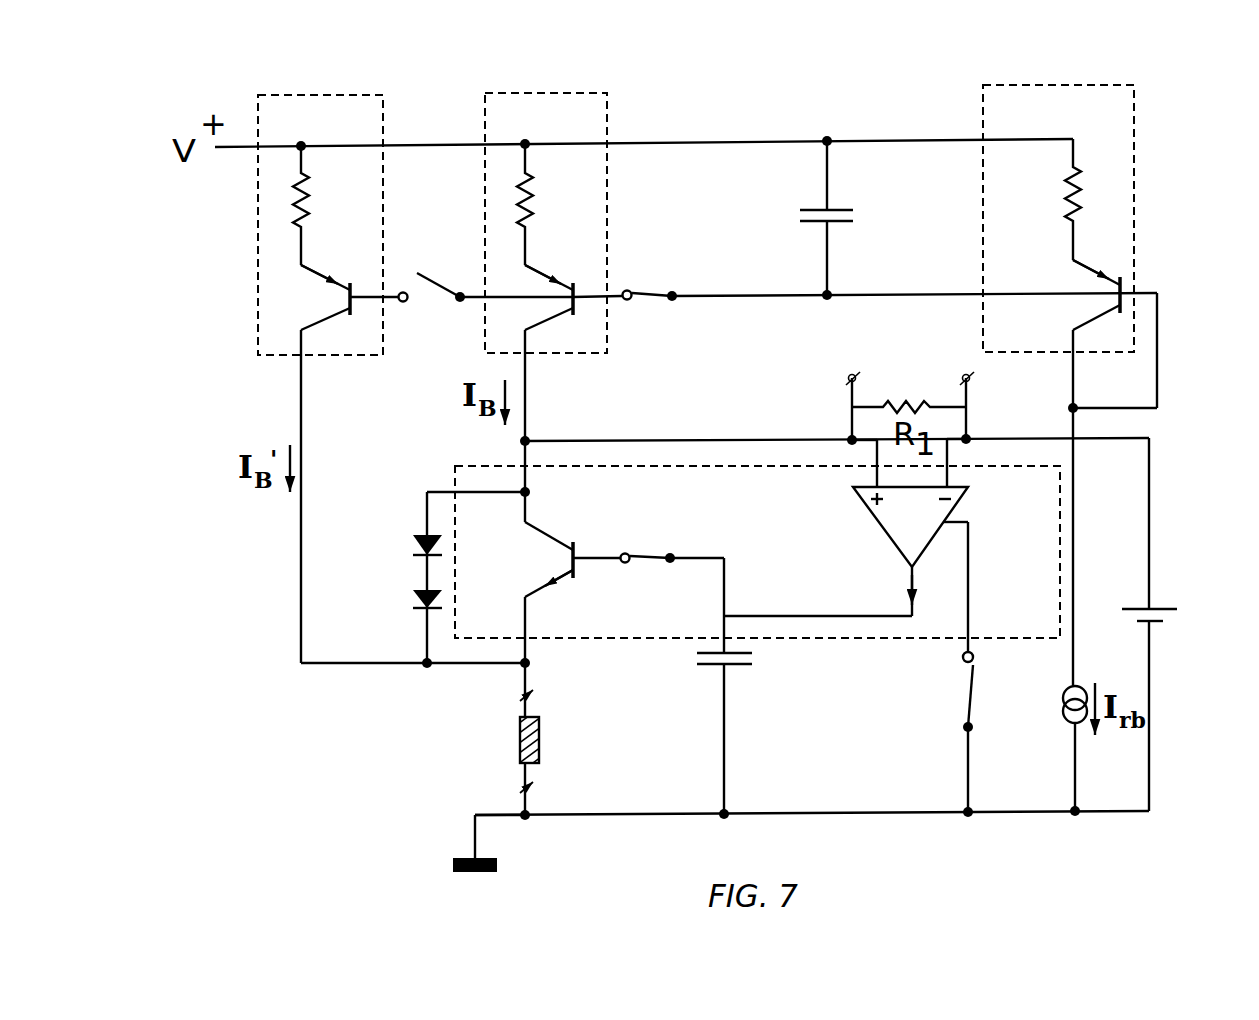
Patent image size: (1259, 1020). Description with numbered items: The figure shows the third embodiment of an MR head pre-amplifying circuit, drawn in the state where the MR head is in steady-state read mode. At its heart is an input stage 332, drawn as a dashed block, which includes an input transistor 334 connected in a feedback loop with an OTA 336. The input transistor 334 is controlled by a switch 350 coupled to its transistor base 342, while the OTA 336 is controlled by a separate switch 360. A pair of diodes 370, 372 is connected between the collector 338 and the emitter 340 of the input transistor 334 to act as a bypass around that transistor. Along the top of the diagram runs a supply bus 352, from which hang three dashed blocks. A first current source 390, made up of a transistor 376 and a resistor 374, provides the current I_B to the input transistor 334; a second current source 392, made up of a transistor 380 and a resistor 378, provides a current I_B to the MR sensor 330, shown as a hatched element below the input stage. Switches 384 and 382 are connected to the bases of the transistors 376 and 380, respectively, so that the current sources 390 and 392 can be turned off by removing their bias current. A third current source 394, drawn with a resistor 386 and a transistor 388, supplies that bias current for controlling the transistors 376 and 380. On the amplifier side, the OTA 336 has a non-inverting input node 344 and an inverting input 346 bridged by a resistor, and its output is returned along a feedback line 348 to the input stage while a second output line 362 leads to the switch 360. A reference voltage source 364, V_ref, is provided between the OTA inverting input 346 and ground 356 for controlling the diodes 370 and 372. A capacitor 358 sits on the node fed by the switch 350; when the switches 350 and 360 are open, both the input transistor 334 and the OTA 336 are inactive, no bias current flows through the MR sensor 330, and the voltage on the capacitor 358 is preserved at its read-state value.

The MR sensor 330 is at (516, 742).
The input stage 332 is at (590, 640).
The input transistor 334 is at (542, 567).
The OTA 336 is at (866, 532).
The collector 338 is at (529, 518).
The emitter 340 is at (529, 631).
The transistor base 342 is at (614, 553).
The non-inverting input node 344 is at (800, 437).
The OTA inverting input 346 is at (985, 437).
The amplifier output line 348 is at (782, 615).
The switch 350 is at (663, 552).
The supply voltage bus V+ 352 is at (692, 139).
The ground 356 is at (451, 866).
The capacitor 358 is at (730, 668).
The switch 360 is at (963, 702).
The amplifier output line 362 is at (972, 548).
The reference voltage source 364 is at (1160, 625).
The diode 370 is at (413, 547).
The diode 372 is at (413, 601).
The resistor 374 is at (522, 190).
The transistor 376 is at (572, 262).
The resistor 378 is at (298, 205).
The transistor 380 is at (262, 300).
The switch 382 is at (435, 287).
The switch 384 is at (640, 292).
The resistor 386 is at (1082, 182).
The transistor 388 is at (1064, 275).
The first current source 390 is at (528, 92).
The second current source 392 is at (303, 93).
The third current source 394 is at (1028, 85).